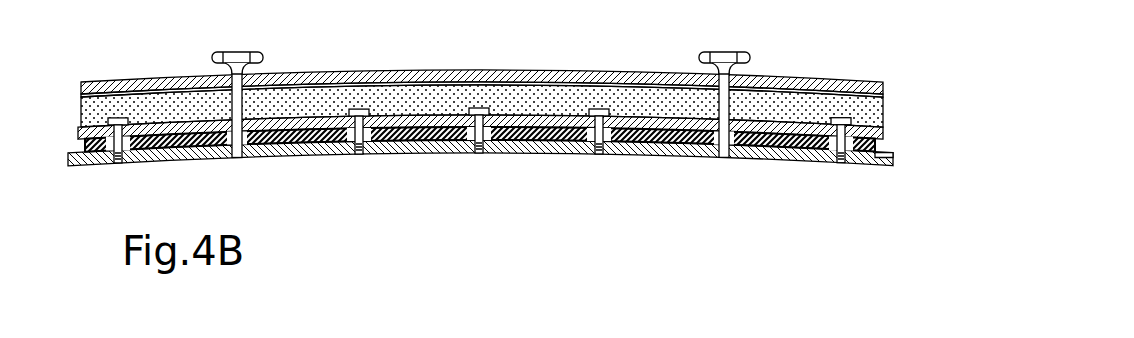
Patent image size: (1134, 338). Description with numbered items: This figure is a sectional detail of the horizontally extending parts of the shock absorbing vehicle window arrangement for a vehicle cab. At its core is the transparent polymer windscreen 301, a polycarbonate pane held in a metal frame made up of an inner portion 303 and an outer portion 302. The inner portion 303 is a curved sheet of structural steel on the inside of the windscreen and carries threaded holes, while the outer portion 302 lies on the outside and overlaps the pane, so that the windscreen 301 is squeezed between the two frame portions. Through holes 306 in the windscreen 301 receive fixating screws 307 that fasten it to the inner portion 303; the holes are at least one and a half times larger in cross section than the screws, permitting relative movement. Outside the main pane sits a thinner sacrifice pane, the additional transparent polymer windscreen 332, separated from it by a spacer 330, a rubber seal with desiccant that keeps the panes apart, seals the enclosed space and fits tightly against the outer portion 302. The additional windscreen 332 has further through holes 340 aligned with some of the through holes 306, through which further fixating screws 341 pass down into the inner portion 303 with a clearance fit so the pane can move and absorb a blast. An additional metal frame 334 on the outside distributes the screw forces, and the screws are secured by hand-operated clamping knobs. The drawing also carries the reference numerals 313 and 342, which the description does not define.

The transparent polymer windscreen 301 is at (893, 153).
The outer portion of the metal frame 302 is at (883, 135).
The inner portion of the metal frame 303 is at (801, 162).
The through holes 306 is at (489, 139).
The fixating screws 307 is at (360, 108).
The fastener 313 is at (475, 153).
The spacer 330 is at (883, 118).
The additional transparent polymer windscreen 332 is at (883, 96).
The additional metal frame 334 is at (852, 81).
The further through holes 340 is at (709, 119).
The further fixating screws 341 is at (715, 108).
The handle 342 is at (745, 57).